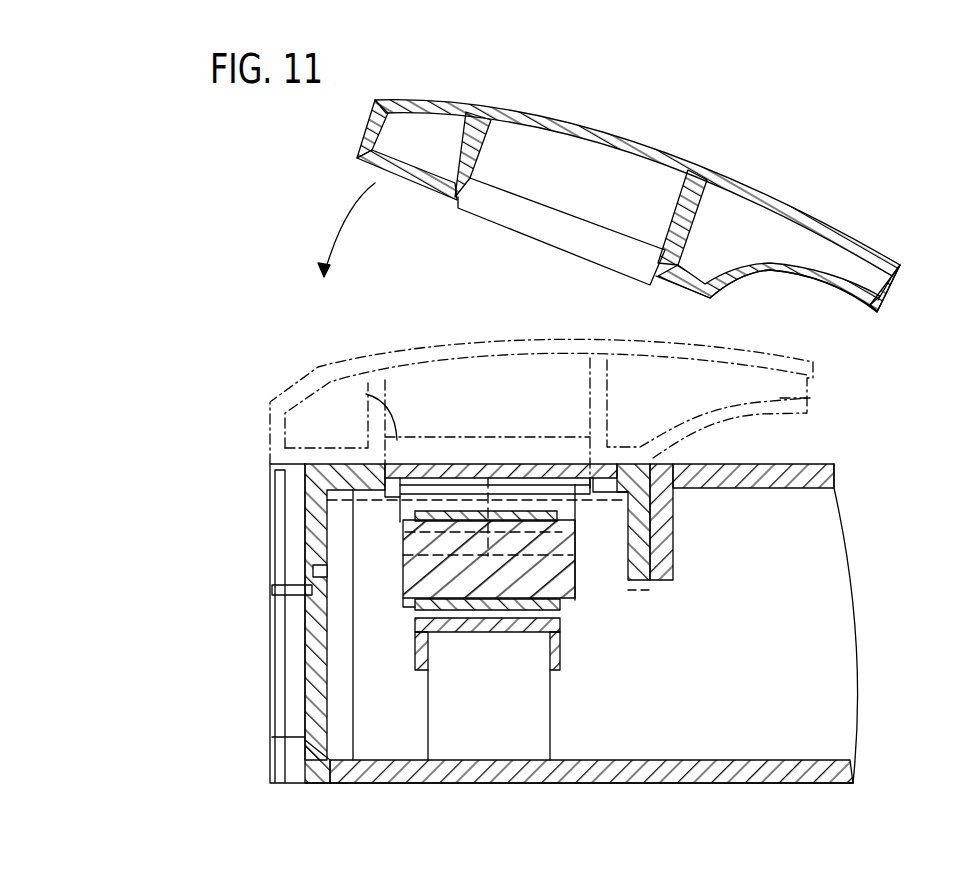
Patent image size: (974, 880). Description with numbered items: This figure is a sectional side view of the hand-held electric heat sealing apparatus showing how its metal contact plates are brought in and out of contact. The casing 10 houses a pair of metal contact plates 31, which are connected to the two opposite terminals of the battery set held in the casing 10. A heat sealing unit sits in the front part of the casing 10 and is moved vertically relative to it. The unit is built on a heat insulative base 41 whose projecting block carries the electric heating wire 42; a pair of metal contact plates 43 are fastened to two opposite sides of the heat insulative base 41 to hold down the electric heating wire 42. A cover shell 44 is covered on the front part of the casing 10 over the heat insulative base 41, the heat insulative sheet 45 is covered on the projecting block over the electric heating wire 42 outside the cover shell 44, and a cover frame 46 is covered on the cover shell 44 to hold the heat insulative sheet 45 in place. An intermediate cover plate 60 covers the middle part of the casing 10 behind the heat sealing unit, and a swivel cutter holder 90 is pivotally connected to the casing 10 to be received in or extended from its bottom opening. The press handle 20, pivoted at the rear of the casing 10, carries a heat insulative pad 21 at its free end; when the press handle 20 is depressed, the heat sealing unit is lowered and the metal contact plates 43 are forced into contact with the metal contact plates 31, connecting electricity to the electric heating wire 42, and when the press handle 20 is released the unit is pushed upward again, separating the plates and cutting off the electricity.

The casing 10 is at (221, 493).
The press handle 20 is at (690, 123).
The heat insulative pad 21 is at (540, 223).
The metal contact plates 31 is at (557, 630).
The heat insulative base 41 is at (538, 493).
The electric heating wire 42 is at (488, 478).
The metal contact plates 43 is at (387, 672).
The cover shell 44 is at (355, 473).
The heat insulative sheet 45 is at (462, 480).
The cover frame 46 is at (415, 463).
The intermediate cover plate 60 is at (762, 470).
The swivel cutter holder 90 is at (332, 778).